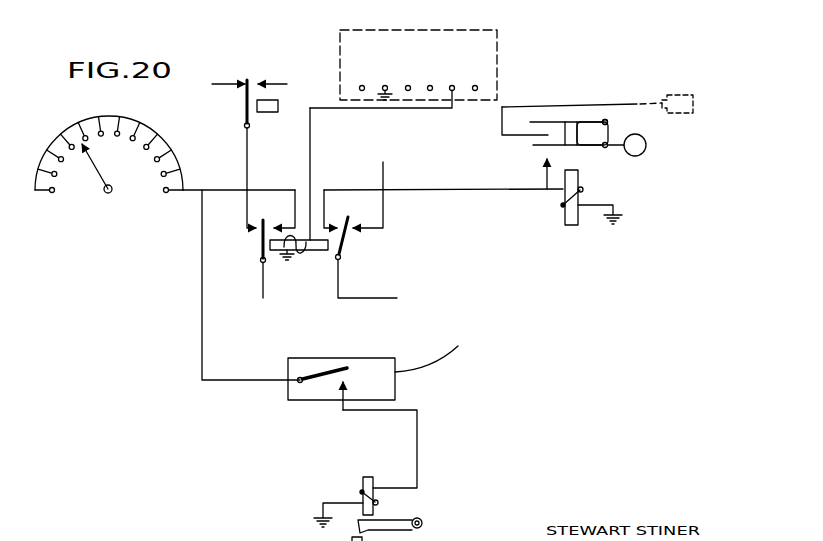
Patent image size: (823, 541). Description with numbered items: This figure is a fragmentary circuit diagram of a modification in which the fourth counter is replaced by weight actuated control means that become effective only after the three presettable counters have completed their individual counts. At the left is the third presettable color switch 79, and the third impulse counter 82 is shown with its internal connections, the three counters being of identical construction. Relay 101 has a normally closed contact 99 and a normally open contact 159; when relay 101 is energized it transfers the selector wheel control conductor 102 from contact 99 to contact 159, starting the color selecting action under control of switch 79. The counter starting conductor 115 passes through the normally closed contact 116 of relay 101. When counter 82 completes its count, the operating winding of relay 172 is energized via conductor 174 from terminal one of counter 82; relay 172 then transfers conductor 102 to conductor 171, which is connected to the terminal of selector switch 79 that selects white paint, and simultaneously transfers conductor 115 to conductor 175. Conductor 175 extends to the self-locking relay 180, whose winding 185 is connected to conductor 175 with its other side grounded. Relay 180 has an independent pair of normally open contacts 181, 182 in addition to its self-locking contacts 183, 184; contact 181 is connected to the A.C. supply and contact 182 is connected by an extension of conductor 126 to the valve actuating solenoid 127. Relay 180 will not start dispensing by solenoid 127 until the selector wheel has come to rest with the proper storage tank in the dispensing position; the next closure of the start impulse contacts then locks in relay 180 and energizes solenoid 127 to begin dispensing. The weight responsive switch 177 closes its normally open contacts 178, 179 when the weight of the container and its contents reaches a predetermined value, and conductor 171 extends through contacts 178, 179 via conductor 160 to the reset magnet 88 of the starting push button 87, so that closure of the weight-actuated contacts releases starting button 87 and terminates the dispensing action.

The third presettable color switch 79 is at (167, 139).
The third impulse counter 82 is at (392, 26).
The starting push button 87 is at (424, 524).
The reset magnet 88 is at (365, 476).
The normally closed contact 99 is at (222, 84).
The double pole double throw relay 101 is at (267, 112).
The conductor 102 is at (263, 280).
The conductor 115 is at (341, 290).
The normally closed contact 116 is at (381, 178).
The conductor 126 is at (558, 106).
The valve actuating solenoid 127 is at (697, 81).
The normally open contact 159 is at (266, 84).
The conductor 160 is at (418, 414).
The conductor 171 is at (232, 188).
The relay 172 is at (320, 251).
The conductor 174 is at (400, 109).
The conductor 175 is at (434, 191).
The weight responsive switch 177 is at (311, 397).
The normally open contact 178 is at (313, 370).
The normally open contact 179 is at (349, 380).
The self-locking relay 180 is at (572, 229).
The normally open contact 181 is at (599, 121).
The normally open contact 182 is at (547, 130).
The self-locking contact 183 is at (544, 175).
The self-locking contact 184 is at (593, 147).
The winding 185 is at (584, 191).